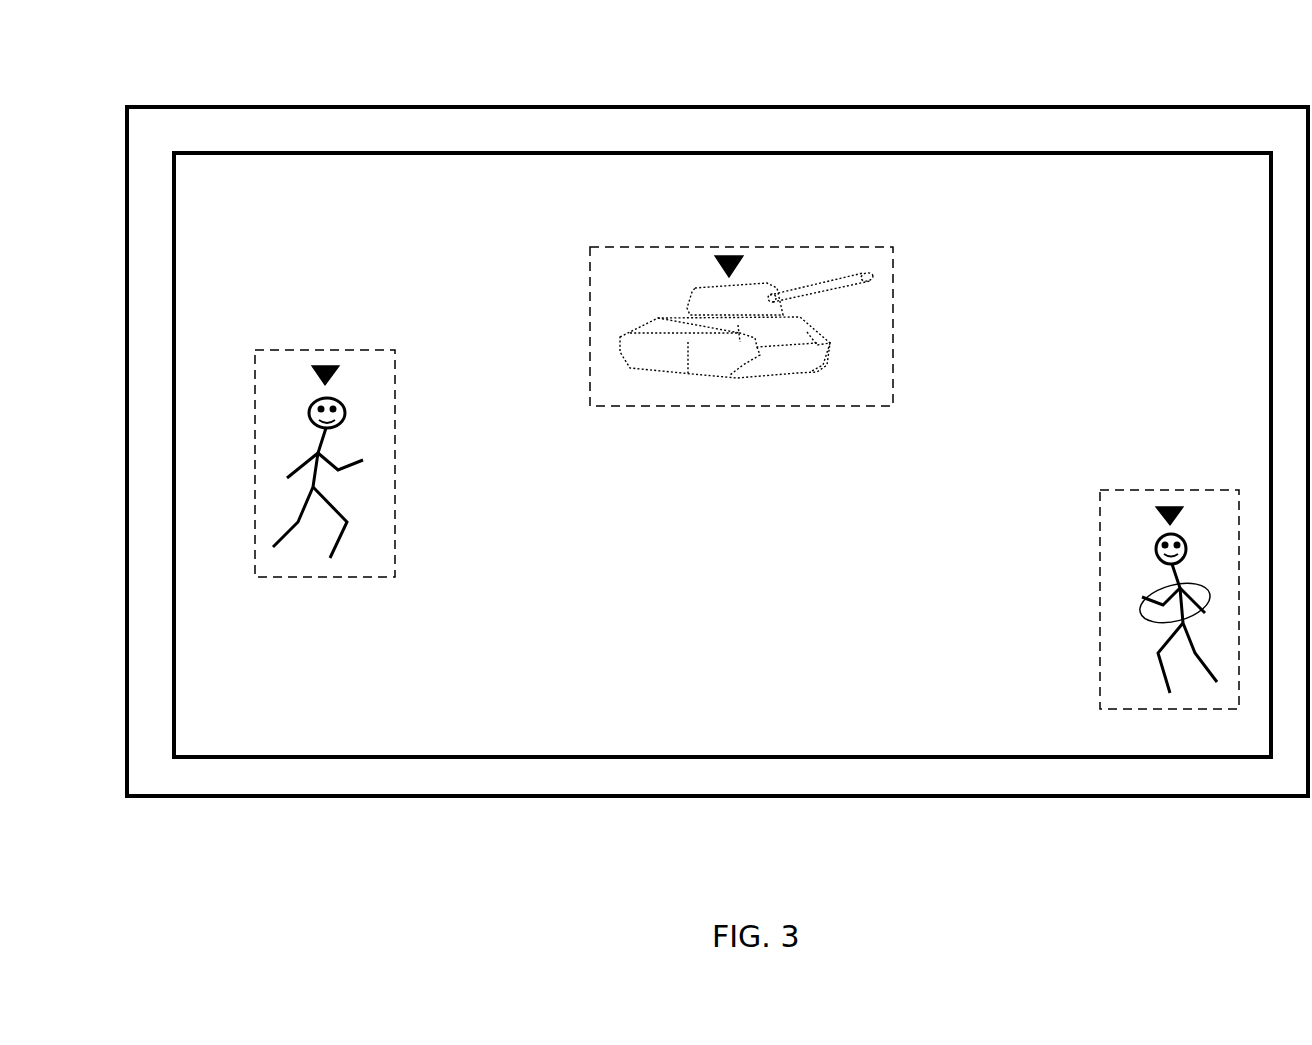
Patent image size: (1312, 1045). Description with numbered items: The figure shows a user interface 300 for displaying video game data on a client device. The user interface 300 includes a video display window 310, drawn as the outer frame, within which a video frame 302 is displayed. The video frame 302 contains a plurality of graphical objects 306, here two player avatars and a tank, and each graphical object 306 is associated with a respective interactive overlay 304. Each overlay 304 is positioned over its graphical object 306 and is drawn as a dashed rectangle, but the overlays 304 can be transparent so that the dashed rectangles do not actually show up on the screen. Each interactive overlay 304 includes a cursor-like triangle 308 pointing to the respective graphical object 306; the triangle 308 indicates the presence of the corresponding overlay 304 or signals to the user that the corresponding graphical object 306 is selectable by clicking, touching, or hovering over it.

The user interface 300 is at (480, 56).
The video frame 302 is at (1254, 186).
The interactive overlay 304 is at (324, 591).
The graphical object 306 is at (362, 413).
The cursor-like triangle 308 is at (358, 368).
The video display window 310 is at (1286, 142).